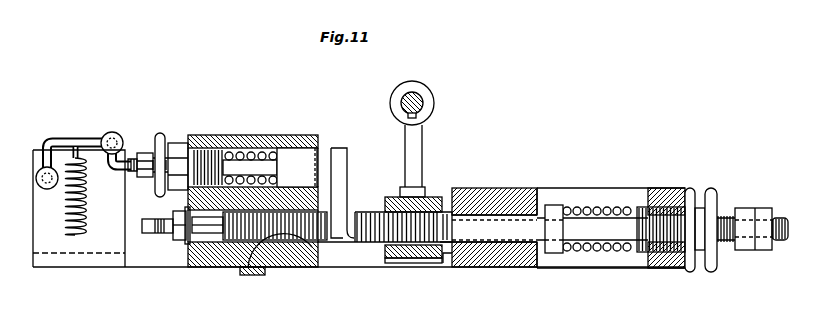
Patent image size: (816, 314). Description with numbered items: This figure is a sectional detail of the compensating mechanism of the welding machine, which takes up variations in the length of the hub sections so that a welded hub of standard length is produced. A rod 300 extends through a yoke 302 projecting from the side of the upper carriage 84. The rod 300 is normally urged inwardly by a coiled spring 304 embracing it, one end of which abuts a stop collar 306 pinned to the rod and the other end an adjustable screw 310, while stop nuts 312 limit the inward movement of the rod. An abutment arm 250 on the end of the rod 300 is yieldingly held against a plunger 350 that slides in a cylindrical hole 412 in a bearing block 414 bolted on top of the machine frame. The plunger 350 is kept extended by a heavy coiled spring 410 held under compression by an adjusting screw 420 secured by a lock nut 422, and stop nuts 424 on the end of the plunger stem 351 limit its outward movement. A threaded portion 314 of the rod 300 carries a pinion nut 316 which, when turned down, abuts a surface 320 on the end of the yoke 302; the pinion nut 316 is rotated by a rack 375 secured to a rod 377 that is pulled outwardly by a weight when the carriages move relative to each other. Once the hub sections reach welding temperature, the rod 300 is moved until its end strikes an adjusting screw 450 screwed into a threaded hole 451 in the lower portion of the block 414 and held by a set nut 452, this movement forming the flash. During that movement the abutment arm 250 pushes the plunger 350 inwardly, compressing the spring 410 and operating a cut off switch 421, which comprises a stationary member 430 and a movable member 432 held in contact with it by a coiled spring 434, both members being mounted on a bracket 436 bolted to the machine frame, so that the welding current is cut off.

The upper carriage 84 is at (491, 273).
The abutment arm 250 is at (341, 143).
The rod 300 is at (463, 217).
The yoke 302 is at (491, 184).
The coiled spring 304 is at (592, 253).
The stop collar 306 is at (557, 250).
The adjustable screw 310 is at (720, 168).
The stop nuts 312 is at (760, 208).
The threaded portion 314 is at (373, 245).
The pinion nut 316 is at (415, 262).
The surface 320 is at (447, 258).
The plunger 350 is at (307, 160).
The plunger stem 351 is at (133, 175).
The rack 375 is at (408, 167).
The rod 377 is at (431, 101).
The heavy coiled spring 410 is at (243, 142).
The cylindrical hole 412 is at (256, 158).
The bearing block 414 is at (247, 257).
The adjusting screw 420 is at (160, 134).
The cut off switch 421 is at (83, 132).
The lock nut 422 is at (183, 142).
The stop nuts 424 is at (149, 145).
The stationary member 430 is at (40, 170).
The movable member 432 is at (116, 132).
The coiled spring 434 is at (63, 220).
The bracket 436 is at (83, 242).
The adjusting screw 450 is at (308, 246).
The threaded hole 451 is at (215, 240).
The set nut 452 is at (176, 237).